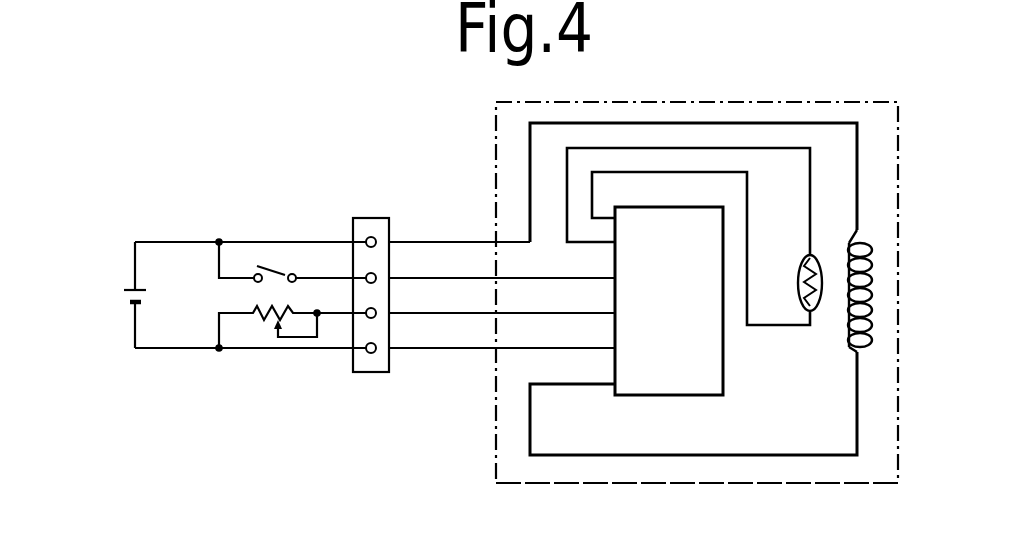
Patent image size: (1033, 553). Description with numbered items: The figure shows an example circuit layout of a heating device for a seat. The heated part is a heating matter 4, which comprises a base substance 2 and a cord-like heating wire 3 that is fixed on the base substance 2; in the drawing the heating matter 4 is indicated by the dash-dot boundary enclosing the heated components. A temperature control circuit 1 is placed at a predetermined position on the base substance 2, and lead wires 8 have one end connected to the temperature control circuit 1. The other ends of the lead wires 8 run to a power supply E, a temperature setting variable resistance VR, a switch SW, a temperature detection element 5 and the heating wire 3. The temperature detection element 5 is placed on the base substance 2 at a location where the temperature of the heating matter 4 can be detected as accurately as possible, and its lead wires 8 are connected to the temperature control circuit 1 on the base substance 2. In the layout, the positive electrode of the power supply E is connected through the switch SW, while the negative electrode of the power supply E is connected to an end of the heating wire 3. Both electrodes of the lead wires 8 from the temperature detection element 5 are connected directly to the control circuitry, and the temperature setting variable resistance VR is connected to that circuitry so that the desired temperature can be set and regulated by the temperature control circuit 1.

The temperature control circuit 1 is at (707, 397).
The base substance 2 is at (640, 466).
The heating wire 3 is at (848, 358).
The heating matter 4 is at (486, 452).
The temperature detection element 5 is at (802, 257).
The lead wires 8 is at (471, 349).
The power supply E is at (147, 295).
The switch SW is at (295, 262).
The temperature setting variable resistance VR is at (295, 328).